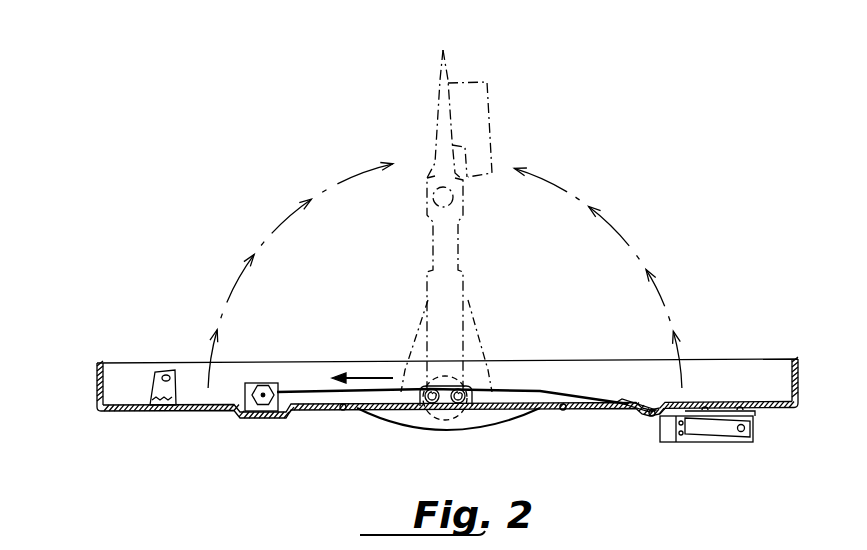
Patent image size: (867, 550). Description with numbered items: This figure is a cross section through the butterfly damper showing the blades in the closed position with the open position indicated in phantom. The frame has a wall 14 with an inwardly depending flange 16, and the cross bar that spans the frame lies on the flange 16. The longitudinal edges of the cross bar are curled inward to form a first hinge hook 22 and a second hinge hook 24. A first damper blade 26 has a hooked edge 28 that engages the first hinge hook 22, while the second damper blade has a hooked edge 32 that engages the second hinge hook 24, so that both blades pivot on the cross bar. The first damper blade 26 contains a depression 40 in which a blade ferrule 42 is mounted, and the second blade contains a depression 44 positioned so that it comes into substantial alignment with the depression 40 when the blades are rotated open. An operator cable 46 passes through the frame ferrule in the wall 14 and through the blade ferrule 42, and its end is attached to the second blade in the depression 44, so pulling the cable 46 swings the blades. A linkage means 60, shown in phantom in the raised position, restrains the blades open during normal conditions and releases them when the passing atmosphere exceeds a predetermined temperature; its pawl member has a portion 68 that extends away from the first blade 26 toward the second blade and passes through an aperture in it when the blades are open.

The wall 14 is at (98, 378).
The inwardly depending flange 16 is at (100, 413).
The first hinge hook 22 is at (433, 405).
The second hinge hook 24 is at (459, 405).
The first damper blade 26 is at (205, 412).
The hooked edge 28 is at (420, 388).
The hooked edge 32 is at (470, 388).
The depression 40 is at (262, 414).
The blade ferrule 42 is at (264, 392).
The depression 44 is at (630, 408).
The operator cable 46 is at (535, 391).
The linkage means 60 is at (500, 91).
The pawl member portion 68 is at (156, 382).